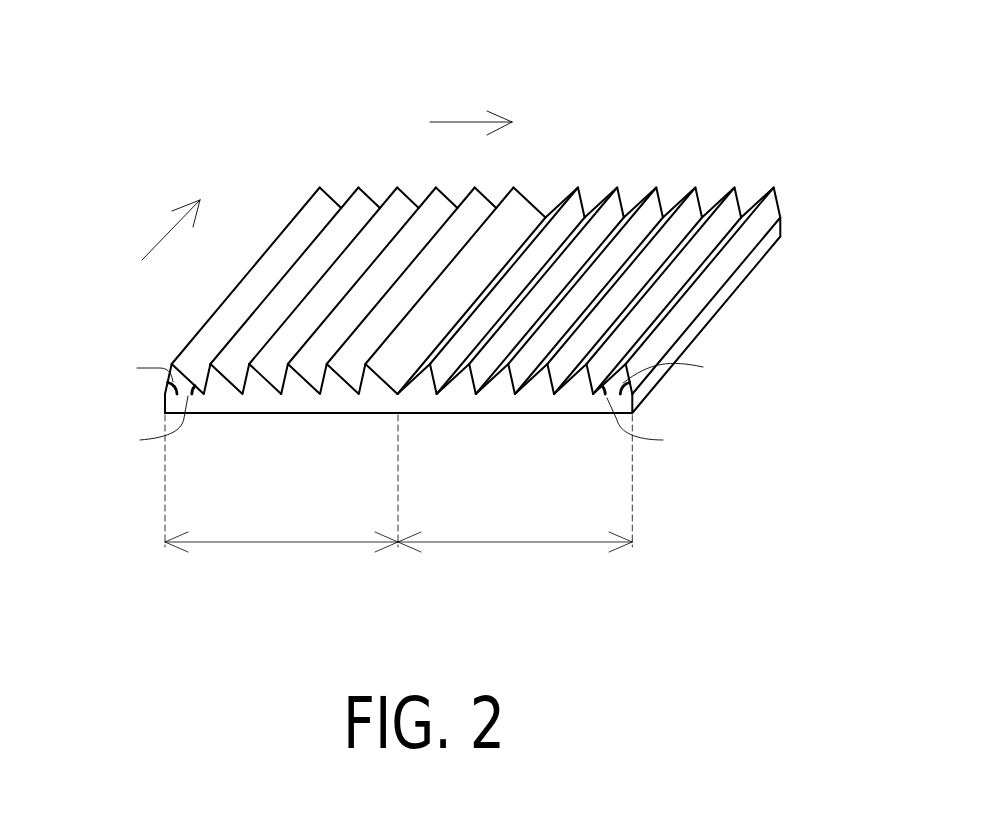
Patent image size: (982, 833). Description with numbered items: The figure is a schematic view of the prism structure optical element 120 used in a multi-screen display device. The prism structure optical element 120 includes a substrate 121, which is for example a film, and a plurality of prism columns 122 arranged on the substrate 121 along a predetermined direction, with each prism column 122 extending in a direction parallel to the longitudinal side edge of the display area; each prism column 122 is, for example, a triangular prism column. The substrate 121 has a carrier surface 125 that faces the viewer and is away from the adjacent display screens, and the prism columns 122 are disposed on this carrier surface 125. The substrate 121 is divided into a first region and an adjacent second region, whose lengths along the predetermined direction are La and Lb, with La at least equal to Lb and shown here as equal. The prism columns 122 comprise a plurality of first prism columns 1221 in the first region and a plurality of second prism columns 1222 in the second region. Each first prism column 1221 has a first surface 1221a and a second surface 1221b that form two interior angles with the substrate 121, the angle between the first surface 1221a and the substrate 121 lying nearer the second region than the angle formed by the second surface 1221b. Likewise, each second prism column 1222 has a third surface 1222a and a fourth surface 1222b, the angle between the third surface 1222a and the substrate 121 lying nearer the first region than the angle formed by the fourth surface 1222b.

The prism structure optical element 120 is at (153, 40).
The substrate 121 is at (755, 257).
The prism columns 122 is at (495, 291).
The first prism columns 1221 is at (303, 233).
The second prism columns 1222 is at (763, 213).
The first surface 1221a is at (274, 386).
The second surface 1221b is at (236, 379).
The third surface 1222a is at (518, 377).
The fourth surface 1222b is at (556, 386).
The carrier surface 125 is at (631, 412).